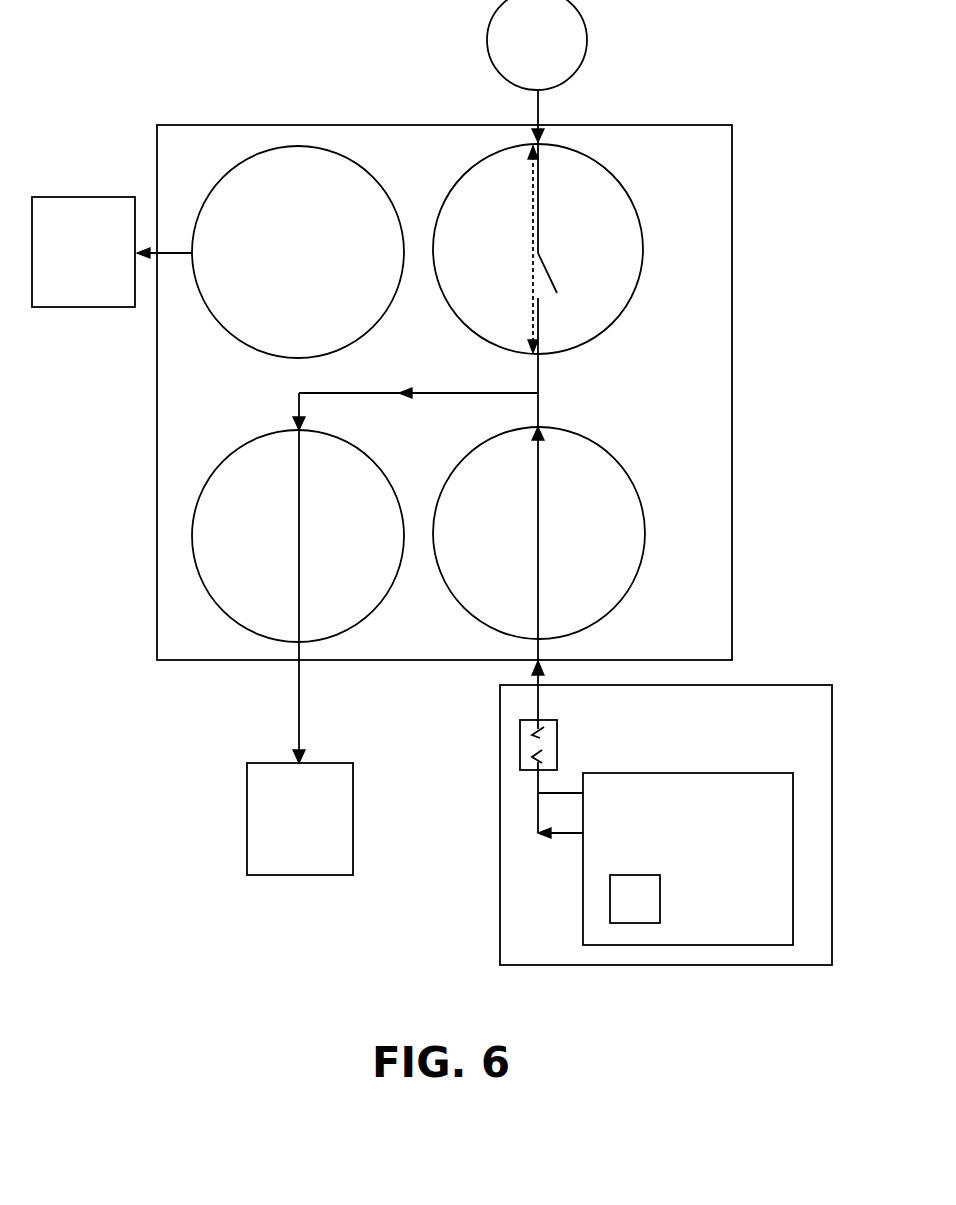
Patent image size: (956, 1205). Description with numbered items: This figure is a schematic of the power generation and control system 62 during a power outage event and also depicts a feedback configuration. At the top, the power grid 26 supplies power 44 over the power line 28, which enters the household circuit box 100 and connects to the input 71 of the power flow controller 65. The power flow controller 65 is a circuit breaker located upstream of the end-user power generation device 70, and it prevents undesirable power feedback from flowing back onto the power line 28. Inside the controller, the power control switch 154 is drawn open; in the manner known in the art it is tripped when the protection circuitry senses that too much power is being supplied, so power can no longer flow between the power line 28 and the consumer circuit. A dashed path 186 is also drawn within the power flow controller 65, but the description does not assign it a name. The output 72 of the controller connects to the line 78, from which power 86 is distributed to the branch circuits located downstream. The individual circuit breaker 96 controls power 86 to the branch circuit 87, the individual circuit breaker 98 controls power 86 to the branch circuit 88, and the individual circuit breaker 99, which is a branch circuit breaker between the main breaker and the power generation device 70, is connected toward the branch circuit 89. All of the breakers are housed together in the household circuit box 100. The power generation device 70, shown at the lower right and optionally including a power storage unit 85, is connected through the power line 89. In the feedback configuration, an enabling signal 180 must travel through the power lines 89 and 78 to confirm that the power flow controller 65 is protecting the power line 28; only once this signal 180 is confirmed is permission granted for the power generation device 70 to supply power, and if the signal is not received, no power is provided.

The power grid 26 is at (588, 40).
The power line 28 is at (537, 105).
The power 44 is at (548, 136).
The input 71 is at (532, 143).
The household circuit box 100 is at (732, 222).
The individual circuit breaker 96 is at (228, 172).
The power flow controller 65 is at (643, 247).
The power control switch 154 is at (555, 273).
The reverse power flow path 186 is at (532, 212).
The output 72 is at (540, 358).
The line 78 is at (540, 373).
The power 86 is at (400, 390).
The individual circuit breaker 98 is at (243, 447).
The individual circuit breaker 99 is at (645, 535).
The power generation and control system 62 is at (803, 486).
The branch circuit 87 is at (80, 197).
The branch circuit 88 is at (353, 820).
The branch circuit 89 is at (536, 665).
The power generation device 70 is at (808, 685).
The enabling signal 180 is at (523, 735).
The power storage unit 85 is at (660, 898).